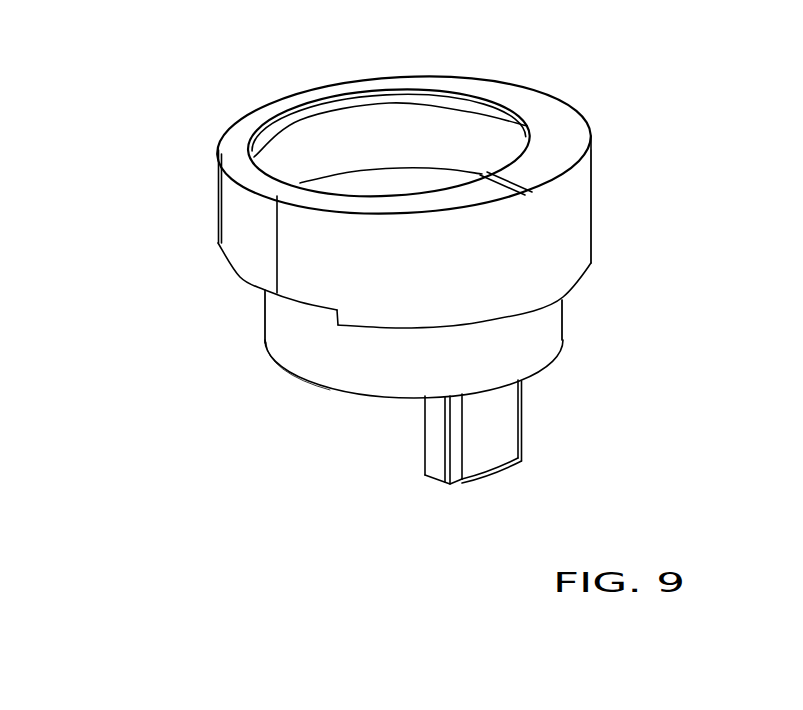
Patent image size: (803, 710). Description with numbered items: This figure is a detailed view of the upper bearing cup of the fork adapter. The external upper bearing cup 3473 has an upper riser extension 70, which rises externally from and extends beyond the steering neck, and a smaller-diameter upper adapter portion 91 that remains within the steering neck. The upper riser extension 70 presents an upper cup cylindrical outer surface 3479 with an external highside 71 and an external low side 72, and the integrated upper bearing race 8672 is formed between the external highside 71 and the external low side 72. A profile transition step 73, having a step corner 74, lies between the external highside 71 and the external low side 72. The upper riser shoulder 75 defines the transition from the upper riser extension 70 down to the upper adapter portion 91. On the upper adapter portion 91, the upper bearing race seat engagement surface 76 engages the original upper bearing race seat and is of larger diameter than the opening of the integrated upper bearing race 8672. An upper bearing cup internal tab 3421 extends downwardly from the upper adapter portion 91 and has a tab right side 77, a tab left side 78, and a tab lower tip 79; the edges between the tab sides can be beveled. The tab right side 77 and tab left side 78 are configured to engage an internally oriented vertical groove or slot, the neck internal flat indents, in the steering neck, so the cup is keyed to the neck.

The upper riser extension 70 is at (217, 202).
The external highside 71 is at (568, 243).
The external low side 72 is at (289, 104).
The profile transition step 73 is at (338, 305).
The step corner 74 is at (330, 322).
The upper riser shoulder 75 is at (567, 300).
The upper bearing race seat engagement surface 76 is at (350, 365).
The tab right side 77 is at (528, 452).
The tab left side 78 is at (435, 428).
The tab lower tip 79 is at (495, 478).
The upper adapter portion 91 is at (287, 327).
The upper bearing cup internal tab 3421 is at (523, 417).
The external upper bearing cup 3473 is at (265, 320).
The upper cup cylindrical outer surface 3479 is at (577, 202).
The integrated upper bearing race 8672 is at (503, 123).